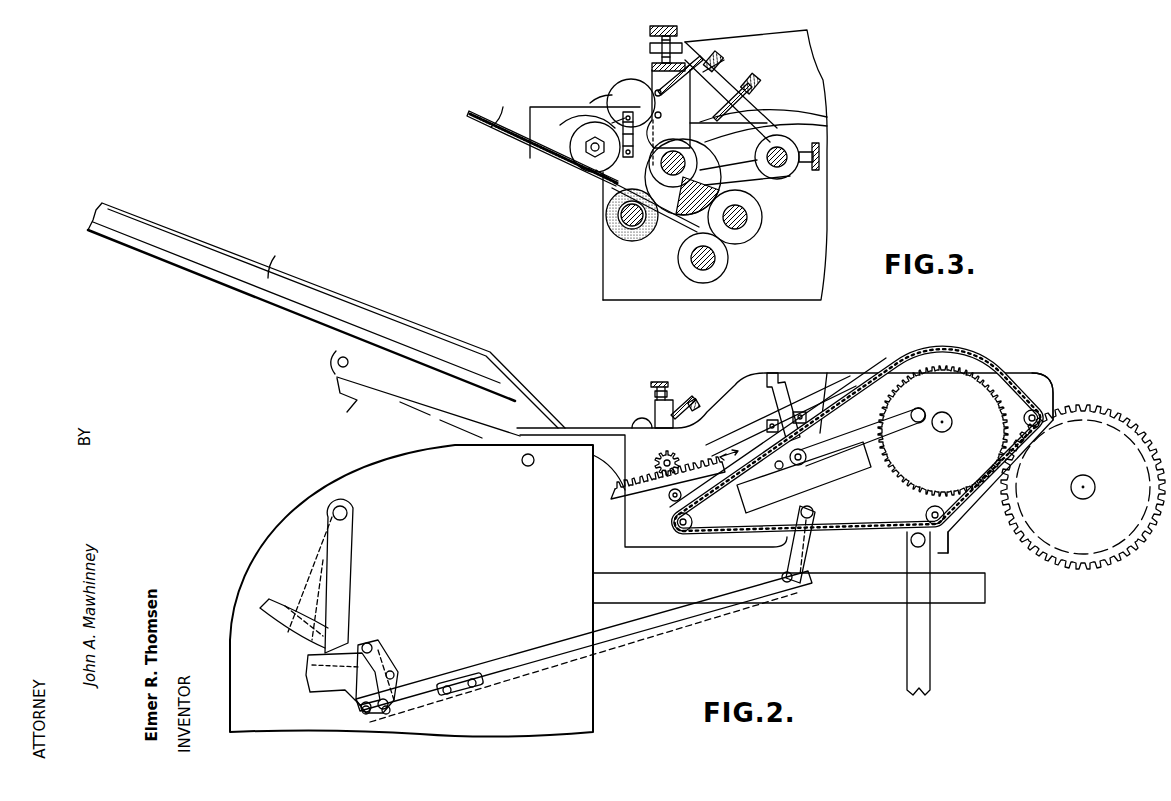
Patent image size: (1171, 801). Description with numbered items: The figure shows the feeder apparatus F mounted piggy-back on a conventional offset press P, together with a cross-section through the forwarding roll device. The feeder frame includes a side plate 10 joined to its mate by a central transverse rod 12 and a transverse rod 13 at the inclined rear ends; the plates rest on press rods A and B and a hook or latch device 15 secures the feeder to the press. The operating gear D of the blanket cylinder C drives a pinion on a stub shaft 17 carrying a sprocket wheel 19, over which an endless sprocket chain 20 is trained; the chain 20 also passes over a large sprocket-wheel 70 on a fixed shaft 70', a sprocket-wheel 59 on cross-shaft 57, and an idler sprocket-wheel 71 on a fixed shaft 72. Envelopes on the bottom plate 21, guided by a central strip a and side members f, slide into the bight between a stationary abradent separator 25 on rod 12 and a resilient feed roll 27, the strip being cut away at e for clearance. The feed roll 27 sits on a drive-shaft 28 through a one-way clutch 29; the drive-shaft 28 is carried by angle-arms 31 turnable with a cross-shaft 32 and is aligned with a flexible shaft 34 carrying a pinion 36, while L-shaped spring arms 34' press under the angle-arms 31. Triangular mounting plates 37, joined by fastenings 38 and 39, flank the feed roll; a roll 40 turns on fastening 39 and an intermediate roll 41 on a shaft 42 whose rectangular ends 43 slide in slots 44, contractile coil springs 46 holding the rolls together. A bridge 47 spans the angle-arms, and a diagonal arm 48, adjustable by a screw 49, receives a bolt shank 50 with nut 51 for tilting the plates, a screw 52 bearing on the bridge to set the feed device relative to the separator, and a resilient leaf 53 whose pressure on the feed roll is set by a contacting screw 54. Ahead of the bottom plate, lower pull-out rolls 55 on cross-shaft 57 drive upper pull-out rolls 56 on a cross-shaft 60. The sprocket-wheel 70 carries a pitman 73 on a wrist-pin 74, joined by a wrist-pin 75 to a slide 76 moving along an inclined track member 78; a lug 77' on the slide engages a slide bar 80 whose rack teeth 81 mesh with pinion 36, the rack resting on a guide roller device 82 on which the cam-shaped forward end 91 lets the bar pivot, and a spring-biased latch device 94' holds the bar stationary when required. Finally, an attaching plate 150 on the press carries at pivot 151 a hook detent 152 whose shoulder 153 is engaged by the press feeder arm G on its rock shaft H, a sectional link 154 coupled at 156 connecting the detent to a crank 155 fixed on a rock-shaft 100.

In FIG. 2, the side plate 10 is at (843, 373).
In FIG. 3, the central transverse rod 12 is at (634, 228).
In FIG. 2, the transverse rod 13 is at (336, 364).
In FIG. 2, the hook or latch device 15 is at (925, 552).
In FIG. 2, the stub shaft 17 is at (1051, 400).
In FIG. 2, the sprocket wheel 19 is at (1033, 408).
In FIG. 2, the endless sprocket chain 20 is at (1012, 378).
In FIG. 3, the bottom plate 21 is at (502, 130).
In FIG. 2, the bottom plate 21 is at (227, 285).
In FIG. 3, the separator 25 is at (608, 222).
In FIG. 3, the feed or forwarding roll 27 is at (752, 115).
In FIG. 3, the drive-shaft 28 is at (776, 121).
In FIG. 3, the one-way clutch connection 29 is at (722, 195).
In FIG. 3, the angle-arms 31 is at (720, 66).
In FIG. 2, the angle-arms 31 is at (655, 412).
In FIG. 3, the cross-shaft 32 is at (798, 130).
In FIG. 2, the flexible shaft 34 is at (655, 457).
In FIG. 3, the L-shaped spring arms 34' is at (758, 176).
In FIG. 2, the gear or pinion 36 is at (676, 458).
In FIG. 3, the mounting plates 37 is at (645, 100).
In FIG. 3, the fastening 38 is at (662, 115).
In FIG. 3, the fastening 39 is at (586, 168).
In FIG. 3, the roll 40 is at (580, 133).
In FIG. 3, the intermediate roll 41 is at (600, 98).
In FIG. 2, the intermediate roll 41 is at (636, 420).
In FIG. 3, the shaft 42 is at (612, 122).
In FIG. 3, the rectangular ends 43 is at (612, 124).
In FIG. 3, the slots 44 is at (628, 158).
In FIG. 3, the contractile coil springs 46 is at (600, 174).
In FIG. 3, the bridge 47 is at (690, 70).
In FIG. 2, the bridge 47 is at (655, 395).
In FIG. 3, the diagonal arm 48 is at (733, 80).
In FIG. 2, the diagonal arm 48 is at (683, 404).
In FIG. 3, the screw 49 is at (820, 152).
In FIG. 3, the bolt shank 50 is at (650, 50).
In FIG. 2, the bolt shank 50 is at (697, 400).
In FIG. 3, the nut 51 is at (717, 56).
In FIG. 3, the screw 52 is at (672, 26).
In FIG. 2, the screw 52 is at (660, 382).
In FIG. 3, the resilient leaf 53 is at (755, 100).
In FIG. 3, the contacting screw 54 is at (760, 88).
In FIG. 3, the lower pull-out rolls 55 is at (724, 266).
In FIG. 3, the upper pull-out rolls 56 is at (748, 238).
In FIG. 3, the cross-shaft 57 is at (692, 266).
In FIG. 2, the cross-shaft 57 is at (683, 531).
In FIG. 2, the sprocket-wheel 59 is at (697, 518).
In FIG. 3, the cross-shaft 60 is at (748, 213).
In FIG. 2, the large sprocket-wheel 70 is at (943, 431).
In FIG. 2, the fixed shaft 70' is at (944, 431).
In FIG. 2, the idler sprocket-wheel 71 is at (936, 506).
In FIG. 2, the fixed shaft 72 is at (952, 528).
In FIG. 2, the pitman 73 is at (880, 444).
In FIG. 2, the wrist-pin 74 is at (920, 408).
In FIG. 2, the wrist-pin 75 is at (808, 460).
In FIG. 2, the slide 76 is at (776, 470).
In FIG. 2, the lug or projection 77' is at (816, 390).
In FIG. 2, the track member 78 is at (822, 486).
In FIG. 2, the feeder device actuating slide bar 80 is at (752, 445).
In FIG. 2, the rack teeth 81 is at (612, 480).
In FIG. 2, the guide roller device 82 is at (668, 491).
In FIG. 2, the inclined or cam-shaped forward end 91 is at (865, 380).
In FIG. 2, the spring-biased latch device 94' is at (773, 407).
In FIG. 2, the rock-shaft 100 is at (813, 508).
In FIG. 2, the attaching plate 150 is at (381, 662).
In FIG. 2, the pivot 151 is at (369, 643).
In FIG. 2, the hook detent 152 is at (343, 677).
In FIG. 2, the shoulder 153 is at (317, 647).
In FIG. 2, the link 154 is at (582, 670).
In FIG. 2, the crank 155 is at (810, 540).
In FIG. 2, the detachable coupling 156 is at (470, 679).
In FIG. 2, the rod A is at (911, 543).
In FIG. 2, the rod B is at (522, 461).
In FIG. 2, the blanket cylinder C is at (1140, 555).
In FIG. 2, the operating gear D is at (1068, 457).
In FIG. 2, the feeder apparatus F is at (788, 371).
In FIG. 2, the feeder arm G is at (338, 577).
In FIG. 2, the rock shaft H is at (348, 507).
In FIG. 2, the press P is at (497, 537).
In FIG. 3, the strip a is at (498, 108).
In FIG. 3, the cut-away e is at (612, 188).
In FIG. 2, the side members f is at (273, 258).